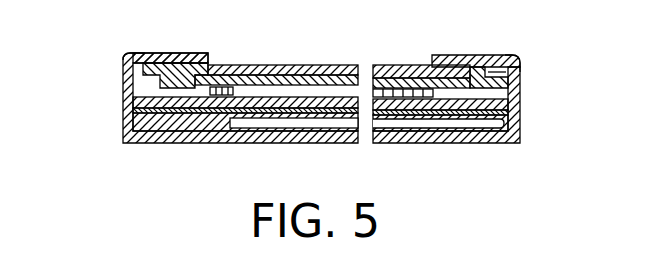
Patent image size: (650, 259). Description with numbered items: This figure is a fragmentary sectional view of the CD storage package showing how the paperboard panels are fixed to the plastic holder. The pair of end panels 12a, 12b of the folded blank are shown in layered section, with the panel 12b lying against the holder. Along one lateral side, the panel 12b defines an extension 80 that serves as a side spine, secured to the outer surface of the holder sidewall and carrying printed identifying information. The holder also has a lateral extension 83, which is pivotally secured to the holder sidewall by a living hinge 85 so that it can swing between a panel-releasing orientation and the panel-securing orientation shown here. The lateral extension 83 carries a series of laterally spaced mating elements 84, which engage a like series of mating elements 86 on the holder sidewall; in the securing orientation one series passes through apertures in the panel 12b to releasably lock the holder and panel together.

The end panel 12a is at (333, 145).
The end panel 12b is at (395, 65).
The extension 80 is at (123, 88).
The lateral extension 83 is at (190, 57).
The mating elements 84 is at (168, 67).
The living hinge 85 is at (522, 89).
The mating elements 86 is at (142, 55).